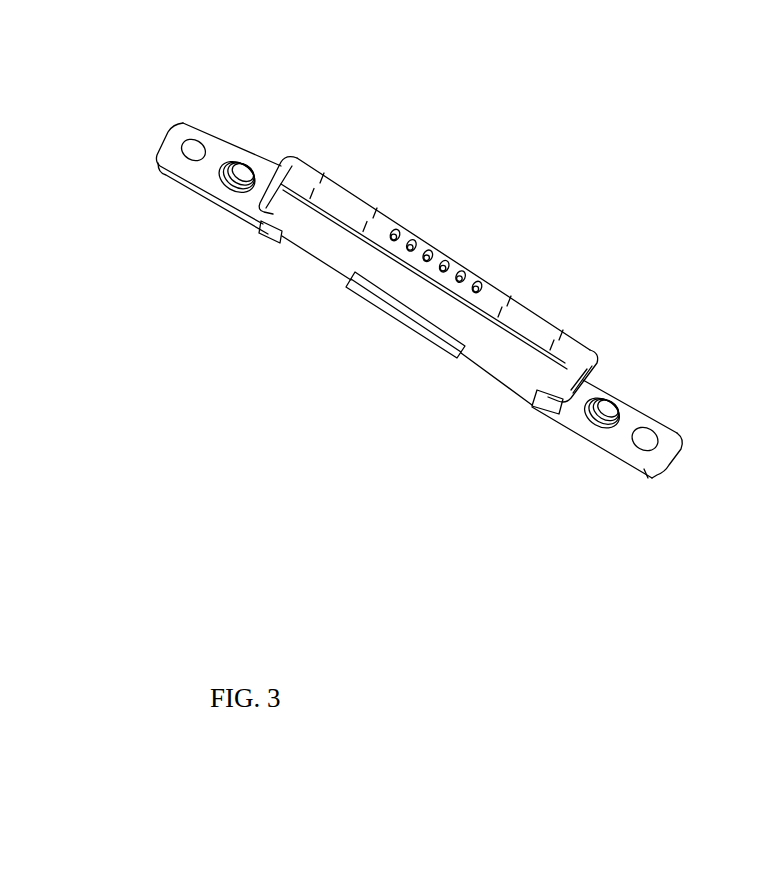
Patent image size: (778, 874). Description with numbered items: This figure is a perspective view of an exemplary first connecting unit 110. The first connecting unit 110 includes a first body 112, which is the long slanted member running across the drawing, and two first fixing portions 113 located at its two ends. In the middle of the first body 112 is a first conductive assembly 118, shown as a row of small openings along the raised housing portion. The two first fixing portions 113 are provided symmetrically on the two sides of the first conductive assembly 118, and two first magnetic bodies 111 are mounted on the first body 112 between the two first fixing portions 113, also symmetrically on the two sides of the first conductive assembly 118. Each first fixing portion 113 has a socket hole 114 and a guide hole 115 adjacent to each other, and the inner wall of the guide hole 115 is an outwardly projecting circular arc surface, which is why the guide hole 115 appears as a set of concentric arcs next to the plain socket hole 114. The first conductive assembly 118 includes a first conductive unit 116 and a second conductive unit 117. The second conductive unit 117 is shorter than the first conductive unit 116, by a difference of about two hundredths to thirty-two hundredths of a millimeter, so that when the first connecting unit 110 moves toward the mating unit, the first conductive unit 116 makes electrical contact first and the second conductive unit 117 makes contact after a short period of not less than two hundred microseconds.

The first connecting unit 110 is at (144, 104).
The first magnetic body 111 is at (325, 195).
The first body 112 is at (289, 208).
The first fixing portion 113 is at (217, 172).
The socket hole 114 is at (192, 150).
The guide hole 115 is at (230, 170).
The first conductive unit 116 is at (400, 226).
The second conductive unit 117 is at (442, 266).
The first conductive assembly 118 is at (512, 172).